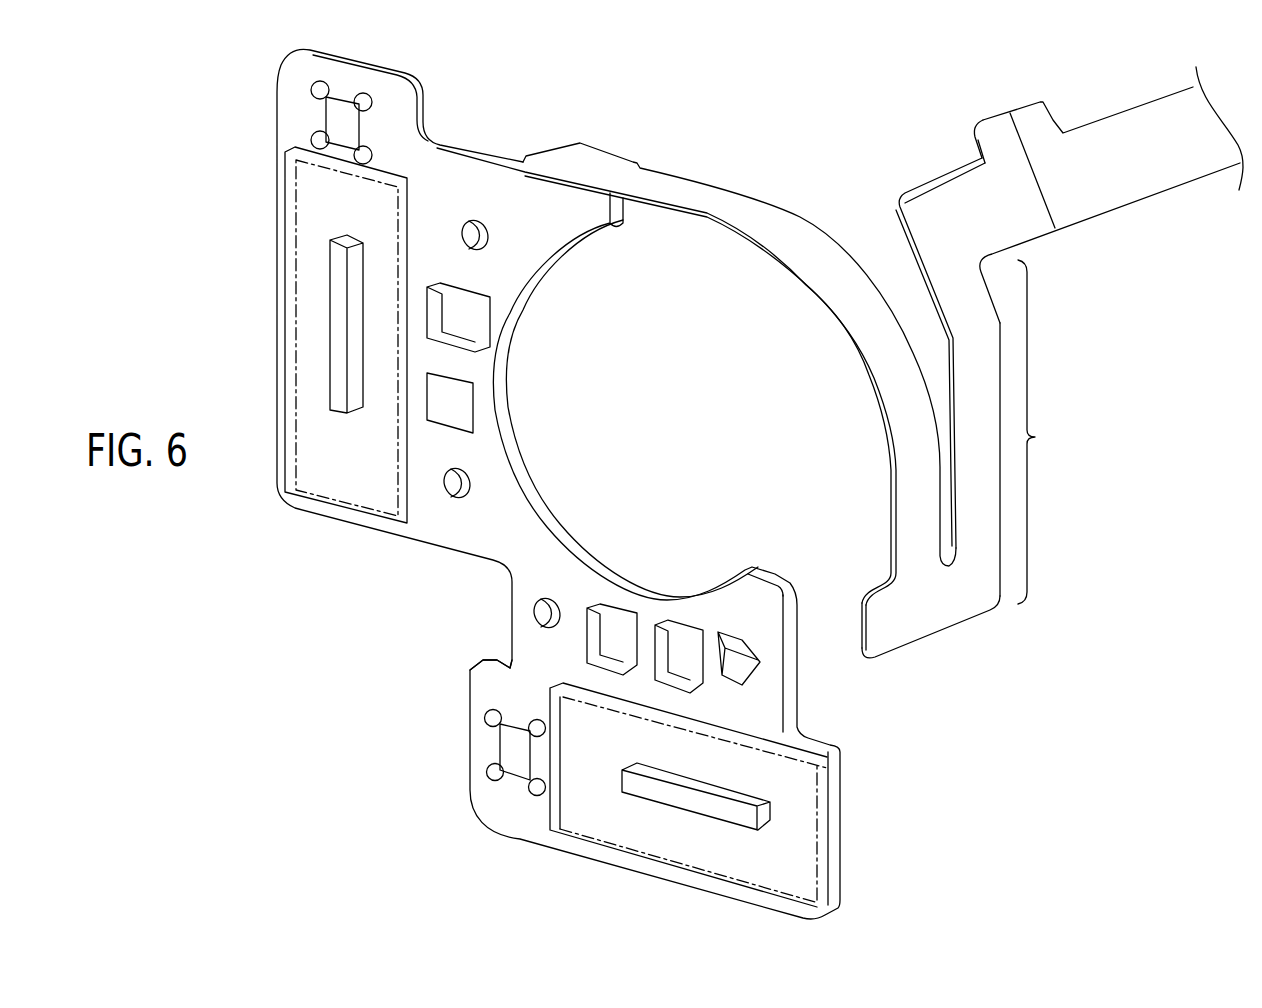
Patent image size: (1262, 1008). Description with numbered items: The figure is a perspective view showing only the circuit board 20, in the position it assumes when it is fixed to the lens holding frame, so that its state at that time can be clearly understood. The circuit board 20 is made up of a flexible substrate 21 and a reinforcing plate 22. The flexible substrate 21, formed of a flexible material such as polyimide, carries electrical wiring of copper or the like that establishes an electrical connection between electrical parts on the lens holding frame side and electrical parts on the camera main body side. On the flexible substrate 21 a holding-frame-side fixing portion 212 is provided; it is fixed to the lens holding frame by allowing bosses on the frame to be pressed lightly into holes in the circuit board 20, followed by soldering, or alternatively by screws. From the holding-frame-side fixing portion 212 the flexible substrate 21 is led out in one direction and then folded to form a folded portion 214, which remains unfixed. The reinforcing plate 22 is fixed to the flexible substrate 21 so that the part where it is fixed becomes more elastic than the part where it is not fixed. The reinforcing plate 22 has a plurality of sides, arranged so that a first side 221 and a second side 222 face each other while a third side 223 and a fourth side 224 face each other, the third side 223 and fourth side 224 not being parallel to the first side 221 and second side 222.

The circuit board 20 is at (427, 558).
The flexible substrate 21 is at (683, 185).
The reinforcing plate 22 is at (907, 637).
The holding-frame-side fixing portion 212 is at (537, 657).
The folded portion 214 is at (1053, 432).
The first side 221 is at (947, 637).
The second side 222 is at (930, 180).
The third side 223 is at (1000, 603).
The fourth side 224 is at (972, 140).